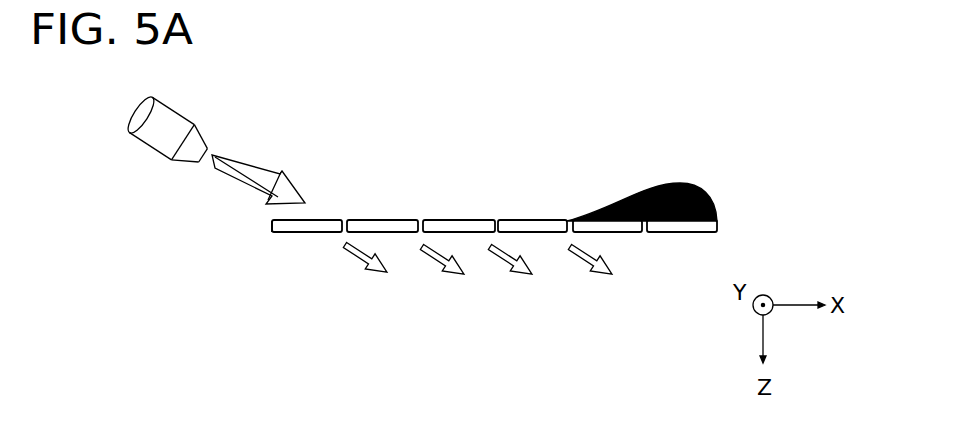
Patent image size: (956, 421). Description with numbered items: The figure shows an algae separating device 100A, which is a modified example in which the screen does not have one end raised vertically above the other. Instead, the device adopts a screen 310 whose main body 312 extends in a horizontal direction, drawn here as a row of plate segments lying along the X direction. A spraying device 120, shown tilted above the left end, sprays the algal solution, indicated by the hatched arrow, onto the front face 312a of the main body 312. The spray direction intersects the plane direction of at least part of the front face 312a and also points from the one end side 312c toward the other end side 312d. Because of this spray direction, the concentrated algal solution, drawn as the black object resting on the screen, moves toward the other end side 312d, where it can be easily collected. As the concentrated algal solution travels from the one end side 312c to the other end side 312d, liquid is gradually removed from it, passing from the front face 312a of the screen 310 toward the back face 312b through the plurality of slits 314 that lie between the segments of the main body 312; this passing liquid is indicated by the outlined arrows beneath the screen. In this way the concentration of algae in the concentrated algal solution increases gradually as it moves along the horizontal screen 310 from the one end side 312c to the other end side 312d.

The algae separating device 100A is at (803, 58).
The spraying device 120 is at (172, 108).
The screen 310 is at (764, 141).
The main body 312 is at (529, 220).
The front face 312a is at (439, 220).
The back face 312b is at (325, 233).
The one end side 312c is at (273, 233).
The other end side 312d is at (717, 228).
The slits 314 is at (420, 233).